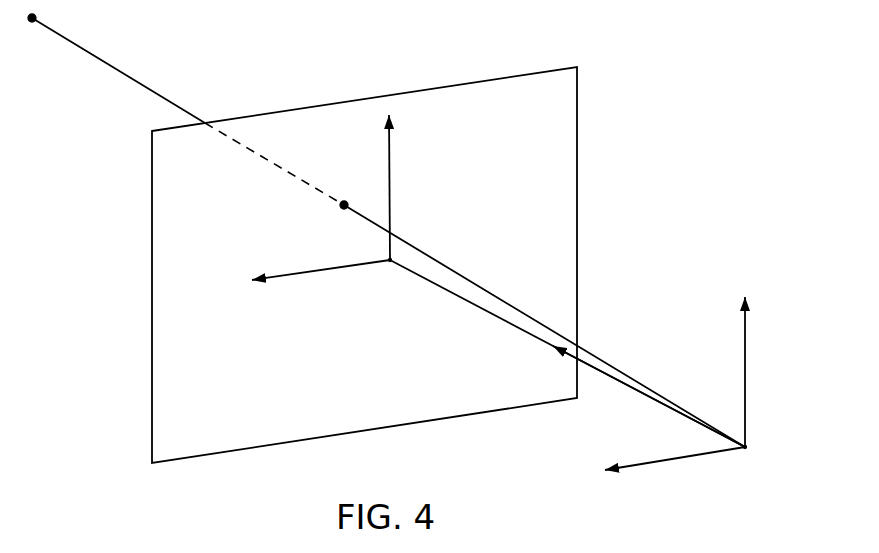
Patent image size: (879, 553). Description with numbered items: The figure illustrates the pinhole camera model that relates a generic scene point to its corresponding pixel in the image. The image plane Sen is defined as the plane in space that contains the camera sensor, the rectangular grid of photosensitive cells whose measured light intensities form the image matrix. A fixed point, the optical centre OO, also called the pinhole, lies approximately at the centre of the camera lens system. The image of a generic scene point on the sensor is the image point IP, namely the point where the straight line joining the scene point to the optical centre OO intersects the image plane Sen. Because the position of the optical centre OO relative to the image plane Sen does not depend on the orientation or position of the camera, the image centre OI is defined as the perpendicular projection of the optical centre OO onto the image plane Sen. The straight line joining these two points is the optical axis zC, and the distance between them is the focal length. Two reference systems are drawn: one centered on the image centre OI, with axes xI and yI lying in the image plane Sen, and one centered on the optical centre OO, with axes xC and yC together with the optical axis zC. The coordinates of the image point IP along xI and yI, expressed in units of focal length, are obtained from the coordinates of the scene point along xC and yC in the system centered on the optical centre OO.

The image plane Sen is at (364, 265).
The image point IP is at (386, 230).
The image centre OI is at (390, 278).
The image x coordinate axis xI is at (321, 288).
The image y coordinate axis yI is at (407, 182).
The optical axis zC is at (567, 353).
The camera y coordinate axis yC is at (768, 372).
The camera x coordinate axis xC is at (675, 475).
The optical centre OO is at (762, 464).